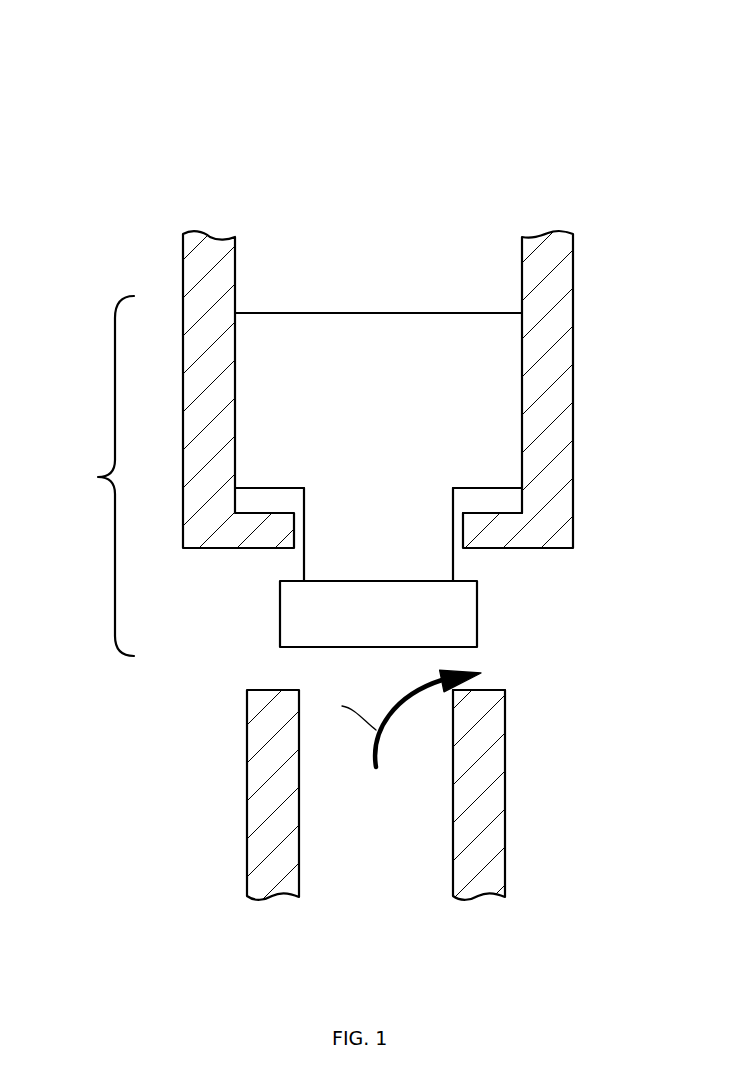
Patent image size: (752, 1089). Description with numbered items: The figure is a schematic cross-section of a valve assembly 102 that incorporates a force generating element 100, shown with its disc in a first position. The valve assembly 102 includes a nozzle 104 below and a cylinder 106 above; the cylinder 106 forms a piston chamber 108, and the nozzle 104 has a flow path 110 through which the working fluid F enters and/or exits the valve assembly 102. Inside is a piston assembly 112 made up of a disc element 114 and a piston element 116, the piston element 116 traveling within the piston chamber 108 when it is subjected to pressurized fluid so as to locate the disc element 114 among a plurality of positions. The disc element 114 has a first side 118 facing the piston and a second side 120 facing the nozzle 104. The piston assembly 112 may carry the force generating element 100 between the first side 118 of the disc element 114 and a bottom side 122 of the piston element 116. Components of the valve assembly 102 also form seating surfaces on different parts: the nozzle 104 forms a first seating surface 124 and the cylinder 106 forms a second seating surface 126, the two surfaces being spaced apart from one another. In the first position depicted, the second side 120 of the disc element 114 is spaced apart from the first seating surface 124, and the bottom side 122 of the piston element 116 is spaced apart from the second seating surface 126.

The force generating element 100 is at (453, 564).
The valve assembly 102 is at (166, 68).
The nozzle 104 is at (505, 783).
The cylinder 106 is at (573, 290).
The piston chamber 108 is at (283, 203).
The flow path 110 is at (330, 912).
The piston assembly 112 is at (98, 476).
The disc element 114 is at (280, 613).
The piston element 116 is at (462, 313).
The first side 118 is at (270, 572).
The second side 120 is at (270, 664).
The bottom side 122 is at (507, 488).
The first seating surface 124 is at (490, 686).
The second seating surface 126 is at (492, 514).